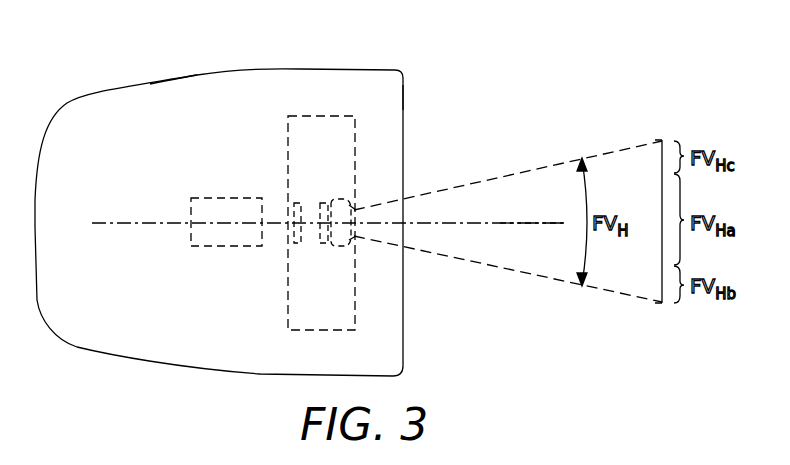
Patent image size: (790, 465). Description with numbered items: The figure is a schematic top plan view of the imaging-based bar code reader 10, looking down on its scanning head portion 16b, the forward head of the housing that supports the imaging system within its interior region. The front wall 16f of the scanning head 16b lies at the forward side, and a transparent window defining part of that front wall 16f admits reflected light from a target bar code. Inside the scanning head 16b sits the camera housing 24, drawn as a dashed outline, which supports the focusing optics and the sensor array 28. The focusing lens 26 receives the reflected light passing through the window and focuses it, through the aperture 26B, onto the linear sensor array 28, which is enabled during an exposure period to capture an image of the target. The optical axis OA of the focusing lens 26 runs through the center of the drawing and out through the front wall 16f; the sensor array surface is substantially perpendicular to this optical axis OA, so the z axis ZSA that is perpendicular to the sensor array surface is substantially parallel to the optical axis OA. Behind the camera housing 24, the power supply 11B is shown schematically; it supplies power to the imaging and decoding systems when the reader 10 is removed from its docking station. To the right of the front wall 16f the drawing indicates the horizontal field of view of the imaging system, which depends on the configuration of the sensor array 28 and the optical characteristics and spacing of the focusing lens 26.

The imaging-based bar code reader 10 is at (60, 50).
The scanning head portion 16b is at (196, 75).
The front wall 16f is at (403, 97).
The z axis ZSA is at (103, 223).
The optical axis OA is at (553, 223).
The power supply 11B is at (227, 223).
The camera housing 24 is at (300, 115).
The sensor array 28 is at (297, 245).
The aperture 26B is at (323, 203).
The focusing lens 26 is at (336, 247).